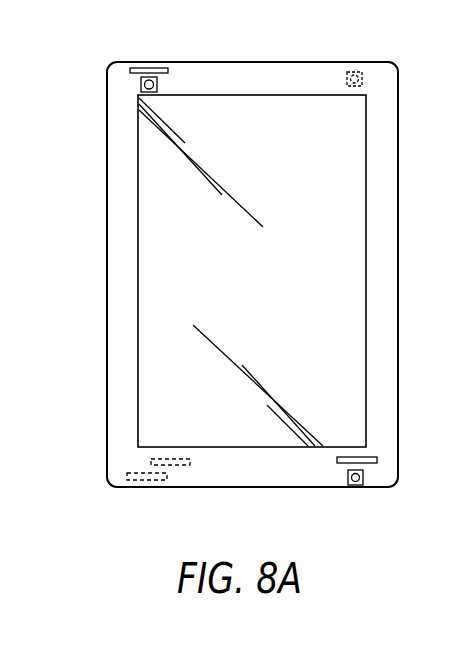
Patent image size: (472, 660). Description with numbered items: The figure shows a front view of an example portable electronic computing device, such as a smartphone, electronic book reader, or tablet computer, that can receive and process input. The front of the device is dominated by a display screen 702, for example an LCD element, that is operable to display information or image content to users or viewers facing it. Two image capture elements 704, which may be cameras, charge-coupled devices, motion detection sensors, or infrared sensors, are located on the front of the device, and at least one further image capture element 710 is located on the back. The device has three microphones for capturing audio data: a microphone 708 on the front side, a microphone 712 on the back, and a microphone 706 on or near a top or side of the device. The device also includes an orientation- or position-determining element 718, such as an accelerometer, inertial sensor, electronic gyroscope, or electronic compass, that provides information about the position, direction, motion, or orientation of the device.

The display screen 702 is at (139, 326).
The image capture element 704 is at (141, 84).
The microphone 706 is at (158, 67).
The microphone 708 is at (377, 460).
The image capture element 710 is at (353, 72).
The microphone 712 is at (177, 466).
The orientation- or position-determining element 718 is at (147, 481).